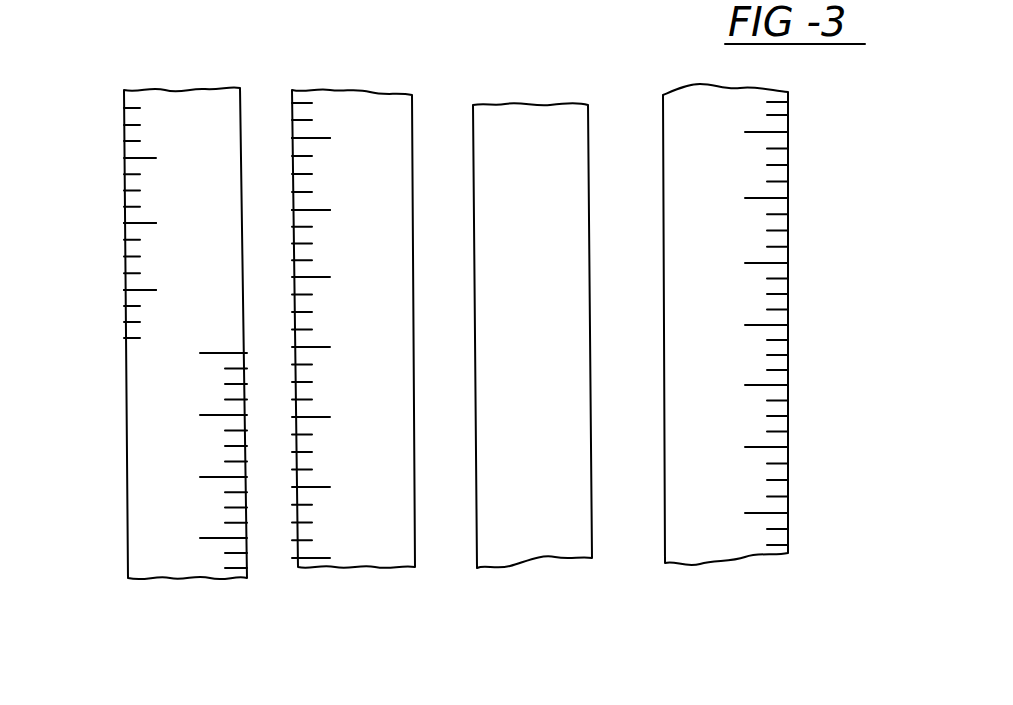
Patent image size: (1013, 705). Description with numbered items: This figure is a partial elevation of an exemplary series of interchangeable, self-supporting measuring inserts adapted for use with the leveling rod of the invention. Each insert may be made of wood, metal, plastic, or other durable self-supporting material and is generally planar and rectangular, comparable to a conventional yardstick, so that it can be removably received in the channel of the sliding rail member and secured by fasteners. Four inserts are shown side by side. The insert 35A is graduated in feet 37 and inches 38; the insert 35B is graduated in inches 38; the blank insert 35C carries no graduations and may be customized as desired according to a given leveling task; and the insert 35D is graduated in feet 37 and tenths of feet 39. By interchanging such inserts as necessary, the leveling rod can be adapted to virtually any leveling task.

The measuring insert graduated in feet and inches 35A is at (178, 583).
The measuring insert graduated in inches 35B is at (360, 570).
The blank measuring insert 35C is at (538, 563).
The measuring insert graduated in feet and tenths of feet 35D is at (730, 565).
The feet graduations 37 is at (155, 368).
The inch graduations 38 is at (124, 223).
The tenths-of-feet graduations 39 is at (735, 208).